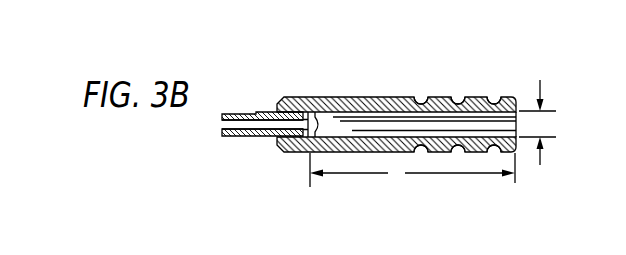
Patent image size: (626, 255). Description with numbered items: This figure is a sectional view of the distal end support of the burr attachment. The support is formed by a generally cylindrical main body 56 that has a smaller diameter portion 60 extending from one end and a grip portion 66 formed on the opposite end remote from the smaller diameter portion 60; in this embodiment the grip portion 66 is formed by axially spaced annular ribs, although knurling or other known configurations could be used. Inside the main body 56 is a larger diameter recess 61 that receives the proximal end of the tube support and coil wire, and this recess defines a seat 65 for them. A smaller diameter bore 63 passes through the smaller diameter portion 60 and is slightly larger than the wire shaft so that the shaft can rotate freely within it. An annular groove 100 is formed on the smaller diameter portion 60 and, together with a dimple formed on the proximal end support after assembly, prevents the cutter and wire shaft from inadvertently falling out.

The annular groove 100 is at (243, 113).
The main body 56 is at (402, 97).
The grip portion 66 is at (502, 96).
The larger diameter recess 61 is at (499, 137).
The smaller diameter portion 60 is at (238, 136).
The smaller diameter bore 63 is at (258, 127).
The seat 65 is at (311, 138).